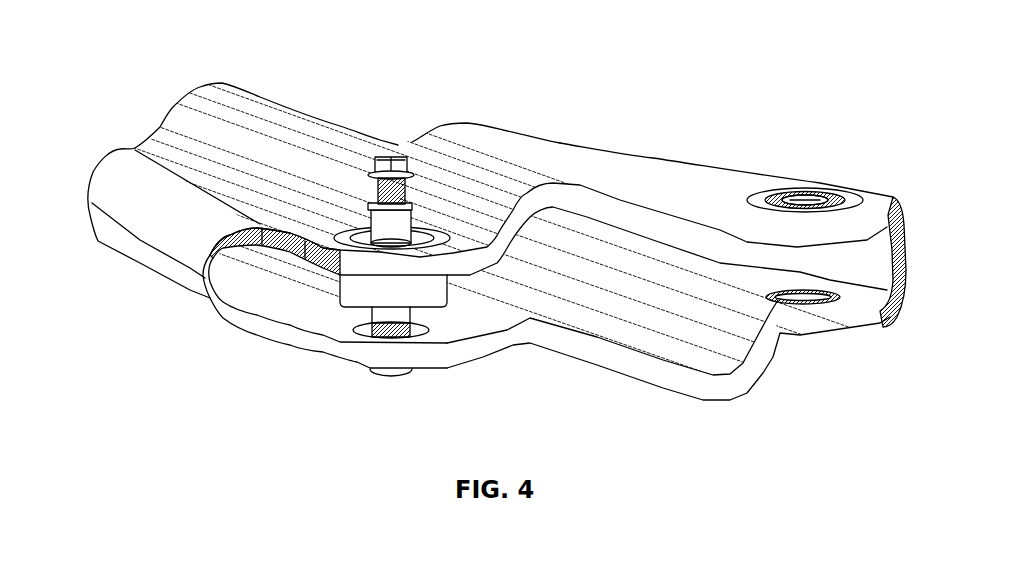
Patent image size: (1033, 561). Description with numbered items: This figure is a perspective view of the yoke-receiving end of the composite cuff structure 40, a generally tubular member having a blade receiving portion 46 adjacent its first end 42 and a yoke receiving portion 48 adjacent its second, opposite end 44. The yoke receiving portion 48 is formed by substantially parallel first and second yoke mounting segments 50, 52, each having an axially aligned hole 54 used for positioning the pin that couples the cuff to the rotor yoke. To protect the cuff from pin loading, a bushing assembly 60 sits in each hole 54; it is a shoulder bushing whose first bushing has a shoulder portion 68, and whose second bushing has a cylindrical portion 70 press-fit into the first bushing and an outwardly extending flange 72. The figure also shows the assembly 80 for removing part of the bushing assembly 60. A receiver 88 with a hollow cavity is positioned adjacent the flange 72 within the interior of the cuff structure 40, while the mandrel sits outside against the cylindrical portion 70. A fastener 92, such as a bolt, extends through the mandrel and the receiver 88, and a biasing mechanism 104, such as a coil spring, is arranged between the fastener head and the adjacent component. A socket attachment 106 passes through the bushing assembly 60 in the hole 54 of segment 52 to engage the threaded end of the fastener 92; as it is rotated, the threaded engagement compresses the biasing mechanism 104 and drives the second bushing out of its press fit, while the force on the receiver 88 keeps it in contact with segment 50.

The composite cuff structure 40 is at (170, 40).
The first end 42 is at (163, 122).
The second end 44 is at (903, 270).
The blade receiving portion 46 is at (108, 156).
The yoke receiving portion 48 is at (792, 332).
The first yoke mounting segment 50 is at (647, 222).
The second yoke mounting segment 52 is at (742, 390).
The holes 54 is at (800, 195).
The bushing assembly 60 is at (838, 182).
The shoulder portion 68 is at (345, 232).
The cylindrical portion 70 is at (432, 222).
The flange 72 is at (440, 322).
The assembly 80 is at (325, 318).
The receiver 88 is at (338, 288).
The fastener 92 is at (393, 152).
The biasing mechanism 104 is at (413, 198).
The socket attachment 106 is at (372, 375).